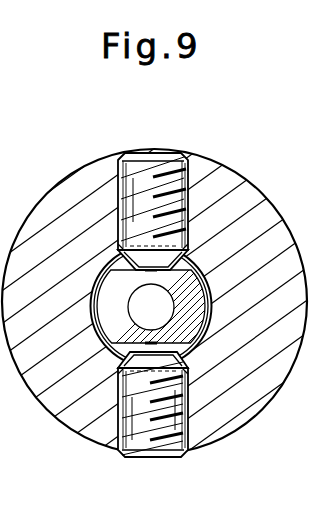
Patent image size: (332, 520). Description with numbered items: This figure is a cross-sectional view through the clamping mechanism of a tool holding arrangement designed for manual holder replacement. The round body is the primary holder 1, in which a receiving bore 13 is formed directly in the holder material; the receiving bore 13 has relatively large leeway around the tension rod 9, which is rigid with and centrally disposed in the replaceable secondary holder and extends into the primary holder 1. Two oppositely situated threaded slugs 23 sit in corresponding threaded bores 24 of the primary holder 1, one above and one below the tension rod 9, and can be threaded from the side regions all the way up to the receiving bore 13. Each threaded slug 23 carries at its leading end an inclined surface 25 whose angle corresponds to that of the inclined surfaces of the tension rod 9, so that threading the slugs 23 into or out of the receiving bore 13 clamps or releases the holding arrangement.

The primary holder 1 is at (68, 205).
The tension rod 9 is at (200, 345).
The receiving bore 13 is at (230, 213).
The threaded slug 23 is at (167, 182).
The threaded bore 24 is at (118, 417).
The inclined surface 25 is at (142, 373).